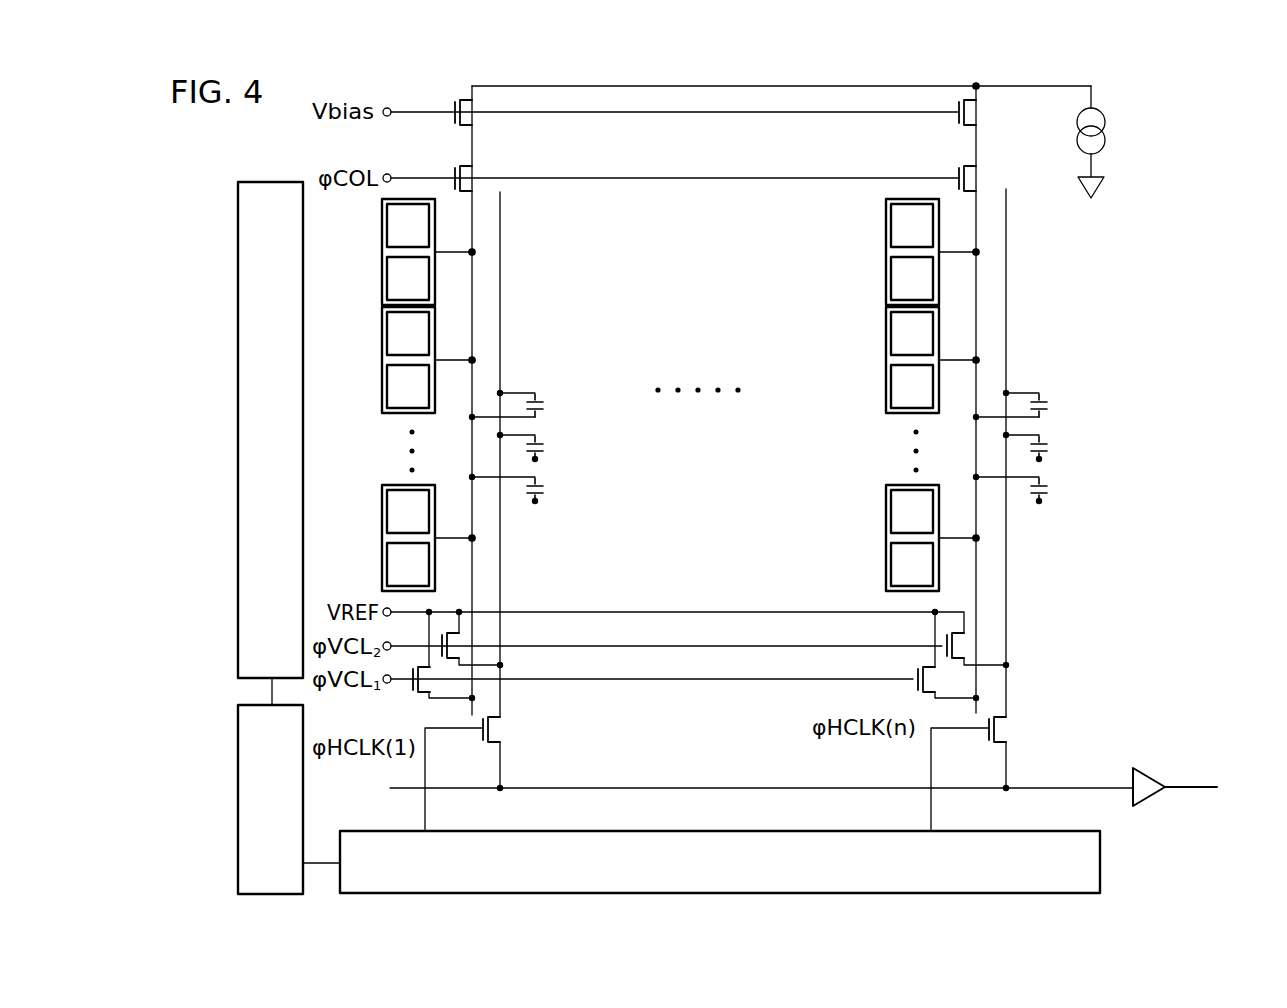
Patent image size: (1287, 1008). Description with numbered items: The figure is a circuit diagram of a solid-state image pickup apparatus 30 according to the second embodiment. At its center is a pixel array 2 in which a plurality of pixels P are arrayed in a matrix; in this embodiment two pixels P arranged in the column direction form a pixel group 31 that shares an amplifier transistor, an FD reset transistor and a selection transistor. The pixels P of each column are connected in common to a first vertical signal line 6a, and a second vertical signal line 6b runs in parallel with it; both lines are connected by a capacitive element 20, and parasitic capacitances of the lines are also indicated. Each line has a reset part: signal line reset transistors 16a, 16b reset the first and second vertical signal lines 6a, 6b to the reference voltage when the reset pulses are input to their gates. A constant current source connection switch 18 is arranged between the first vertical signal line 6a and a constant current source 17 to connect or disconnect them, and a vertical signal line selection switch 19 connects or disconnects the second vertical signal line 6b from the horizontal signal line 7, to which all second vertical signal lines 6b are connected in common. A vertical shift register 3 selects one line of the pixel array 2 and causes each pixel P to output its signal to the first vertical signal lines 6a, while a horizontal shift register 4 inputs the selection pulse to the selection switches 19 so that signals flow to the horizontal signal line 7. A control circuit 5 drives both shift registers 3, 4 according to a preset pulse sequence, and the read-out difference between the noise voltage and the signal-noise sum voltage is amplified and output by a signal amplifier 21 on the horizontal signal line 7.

The pixel array 2 is at (1083, 281).
The vertical shift register 3 is at (238, 452).
The horizontal shift register 4 is at (1100, 862).
The control circuit 5 is at (238, 758).
The first vertical signal line 6a is at (472, 289).
The second vertical signal line 6b is at (500, 331).
The horizontal signal line 7 is at (700, 787).
The signal line reset transistor 16a is at (420, 692).
The signal line reset transistor 16b is at (452, 636).
The constant current source 17 is at (1105, 142).
The constant current source connection switch 18 is at (466, 170).
The vertical signal line selection switch 19 is at (497, 720).
The capacitive element 20 is at (538, 398).
The signal amplifier 21 is at (1147, 768).
The solid-state image pickup apparatus 30 is at (1205, 180).
The pixel group 31 is at (382, 254).
The pixel P is at (387, 228).